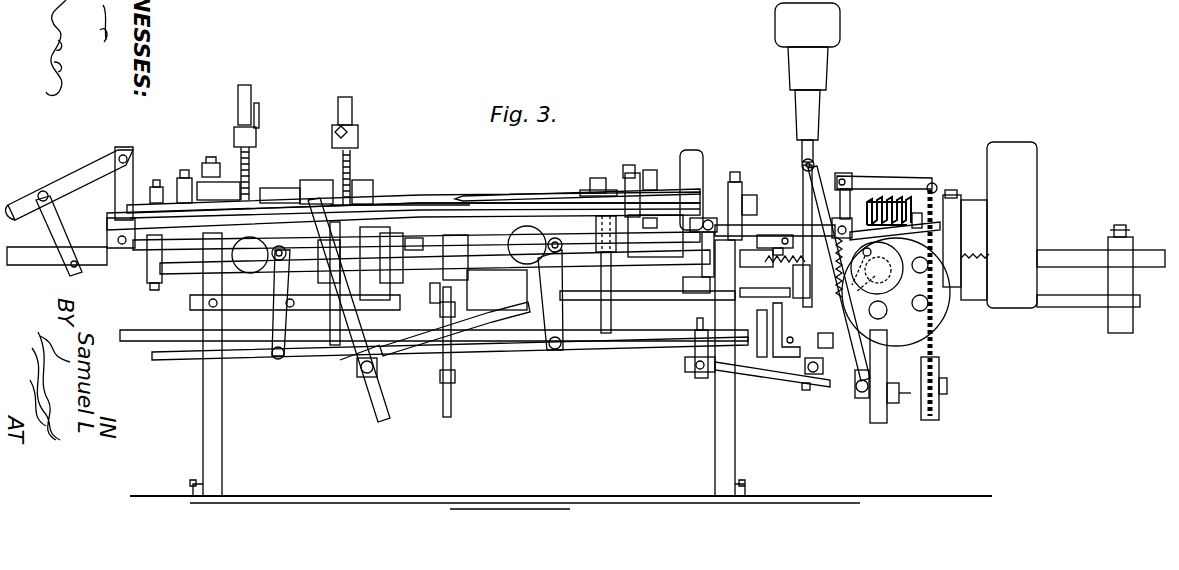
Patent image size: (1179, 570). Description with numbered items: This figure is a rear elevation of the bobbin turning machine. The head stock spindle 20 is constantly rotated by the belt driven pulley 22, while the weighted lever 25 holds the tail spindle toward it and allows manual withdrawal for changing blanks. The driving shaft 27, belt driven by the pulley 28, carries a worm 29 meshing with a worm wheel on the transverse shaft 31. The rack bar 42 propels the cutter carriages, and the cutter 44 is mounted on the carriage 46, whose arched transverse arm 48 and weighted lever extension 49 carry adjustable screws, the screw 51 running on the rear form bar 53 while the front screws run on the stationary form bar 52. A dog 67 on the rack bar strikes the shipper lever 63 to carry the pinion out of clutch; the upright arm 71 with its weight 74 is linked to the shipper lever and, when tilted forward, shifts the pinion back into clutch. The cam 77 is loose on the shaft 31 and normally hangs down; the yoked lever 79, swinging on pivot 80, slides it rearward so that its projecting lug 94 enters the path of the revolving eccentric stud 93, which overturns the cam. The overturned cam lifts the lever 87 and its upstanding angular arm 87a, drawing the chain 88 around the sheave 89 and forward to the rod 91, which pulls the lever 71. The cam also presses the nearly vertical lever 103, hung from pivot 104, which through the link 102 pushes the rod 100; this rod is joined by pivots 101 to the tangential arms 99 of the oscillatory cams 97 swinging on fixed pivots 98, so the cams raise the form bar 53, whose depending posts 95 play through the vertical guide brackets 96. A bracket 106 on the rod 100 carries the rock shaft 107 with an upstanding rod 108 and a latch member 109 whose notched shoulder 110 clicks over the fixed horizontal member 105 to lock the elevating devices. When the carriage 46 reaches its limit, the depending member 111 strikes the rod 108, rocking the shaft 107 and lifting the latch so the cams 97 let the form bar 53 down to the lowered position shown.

The head stock spindle 20 is at (480, 197).
The belt driven pulley 22 is at (660, 175).
The weighted lever 25 is at (62, 175).
The driving shaft 27 is at (856, 212).
The pulley 28 is at (1012, 225).
The worm 29 is at (890, 200).
The shaft 31 is at (890, 275).
The rack bar 42 is at (793, 270).
The cutter 44 is at (380, 210).
The carriage 46 is at (370, 196).
The transverse arm 48 is at (238, 100).
The weighted lever extension 49 is at (234, 138).
The adjustable screw 51 is at (365, 163).
The form bar 52 is at (120, 275).
The form bar 53 is at (427, 210).
The shipper lever 63 is at (1085, 303).
The dog 67 is at (1132, 320).
The upright arm 71 is at (803, 192).
The weight 74 is at (807, 82).
The cam 77 is at (896, 292).
The lever 79 is at (884, 376).
The pivot 80 is at (900, 405).
The lever 87 is at (790, 215).
The upstanding angular arm 87a is at (905, 222).
The chain 88 is at (703, 245).
The sheave 89 is at (942, 405).
The rod 91 is at (810, 382).
The eccentric stud 93 is at (834, 277).
The projecting lug 94 is at (966, 245).
The depending post 95 is at (330, 318).
The vertical guide bracket 96 is at (325, 278).
The oscillatory cam 97 is at (389, 249).
The fixed pivot 98 is at (432, 237).
The tangential arm 99 is at (272, 290).
The rod 100 is at (487, 348).
The pivot 101 is at (275, 360).
The link 102 is at (745, 375).
The lever 103 is at (818, 180).
The pivot 104 is at (815, 160).
The fixed horizontal member 105 is at (444, 395).
The bracket 106 is at (358, 372).
The rock shaft 107 is at (380, 360).
The upstanding rod 108 is at (352, 350).
The latch member 109 is at (440, 325).
The notched shoulder 110 is at (497, 288).
The depending member 111 is at (312, 188).